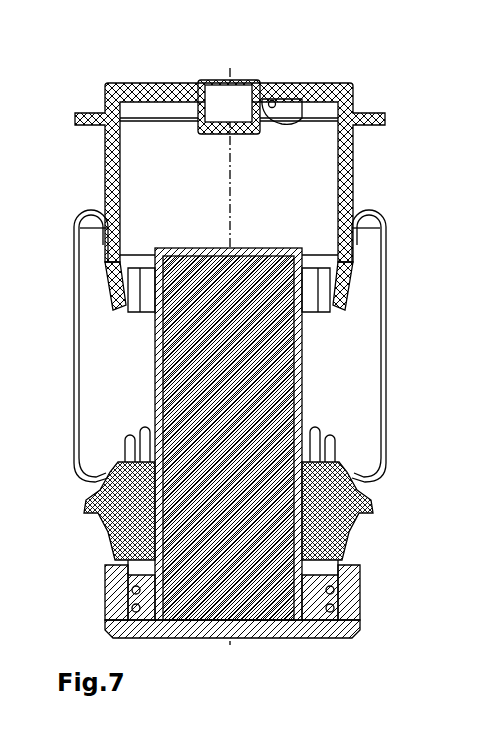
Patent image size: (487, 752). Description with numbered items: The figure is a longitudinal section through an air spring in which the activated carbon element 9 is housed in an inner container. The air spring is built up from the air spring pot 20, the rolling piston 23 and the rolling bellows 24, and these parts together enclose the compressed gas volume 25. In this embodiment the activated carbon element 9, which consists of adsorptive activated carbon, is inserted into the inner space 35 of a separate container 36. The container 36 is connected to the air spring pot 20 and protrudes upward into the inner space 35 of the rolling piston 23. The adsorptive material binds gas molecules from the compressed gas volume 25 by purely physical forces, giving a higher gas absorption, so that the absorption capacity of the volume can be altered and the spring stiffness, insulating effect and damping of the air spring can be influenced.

The activated carbon element 9 is at (302, 365).
The air spring pot 20 is at (345, 540).
The rolling piston 23 is at (353, 173).
The rolling bellows 24 is at (386, 297).
The compressed gas volume 25 is at (116, 388).
The inner space 35 is at (258, 204).
The separate container 36 is at (298, 434).